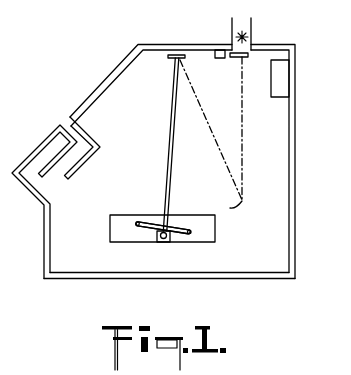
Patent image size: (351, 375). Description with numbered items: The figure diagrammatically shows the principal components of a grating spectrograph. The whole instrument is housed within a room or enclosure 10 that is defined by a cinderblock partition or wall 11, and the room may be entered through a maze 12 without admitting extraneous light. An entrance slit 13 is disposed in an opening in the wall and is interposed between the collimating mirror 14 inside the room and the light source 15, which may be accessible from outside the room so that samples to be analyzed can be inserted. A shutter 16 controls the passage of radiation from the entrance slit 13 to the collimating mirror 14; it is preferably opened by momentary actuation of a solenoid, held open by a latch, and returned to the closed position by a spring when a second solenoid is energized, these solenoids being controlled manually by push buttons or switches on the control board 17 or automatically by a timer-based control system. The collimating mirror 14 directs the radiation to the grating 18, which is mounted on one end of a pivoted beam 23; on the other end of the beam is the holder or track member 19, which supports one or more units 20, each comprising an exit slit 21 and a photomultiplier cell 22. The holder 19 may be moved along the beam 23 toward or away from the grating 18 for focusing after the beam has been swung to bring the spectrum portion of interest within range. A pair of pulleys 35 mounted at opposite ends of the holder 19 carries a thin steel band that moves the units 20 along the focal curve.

The room or enclosure 10 is at (285, 247).
The cinderblock partition or wall 11 is at (137, 278).
The maze 12 is at (73, 163).
The entrance slit 13 is at (251, 46).
The collimating mirror 14 is at (243, 204).
The light source 15 is at (232, 33).
The shutter 16 is at (236, 58).
The control board 17 is at (282, 99).
The grating 18 is at (172, 60).
The holder or track member 19 is at (183, 220).
The unit 20 is at (173, 235).
The exit slit 21 is at (158, 237).
The photomultiplier cell 22 is at (163, 242).
The pivoted beam 23 is at (173, 165).
The pulleys 35 is at (137, 225).